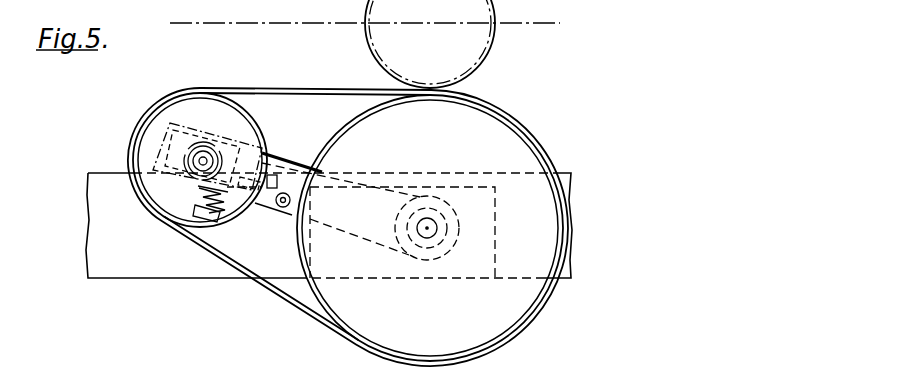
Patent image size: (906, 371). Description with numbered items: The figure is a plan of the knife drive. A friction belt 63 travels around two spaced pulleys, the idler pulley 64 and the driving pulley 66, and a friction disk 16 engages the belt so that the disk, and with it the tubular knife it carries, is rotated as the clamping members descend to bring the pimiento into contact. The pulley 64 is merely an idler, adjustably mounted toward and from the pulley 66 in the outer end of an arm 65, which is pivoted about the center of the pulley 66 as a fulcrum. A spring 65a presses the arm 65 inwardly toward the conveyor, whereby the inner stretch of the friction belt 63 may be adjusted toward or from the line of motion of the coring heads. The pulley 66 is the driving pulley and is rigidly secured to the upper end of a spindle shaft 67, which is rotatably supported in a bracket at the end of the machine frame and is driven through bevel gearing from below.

The friction disk 16 is at (485, 58).
The friction belt 63 is at (283, 90).
The idler pulley 64 is at (176, 115).
The arm 65 is at (286, 156).
The spring 65a is at (192, 210).
The driving pulley 66 is at (510, 147).
The spindle shaft 67 is at (438, 227).